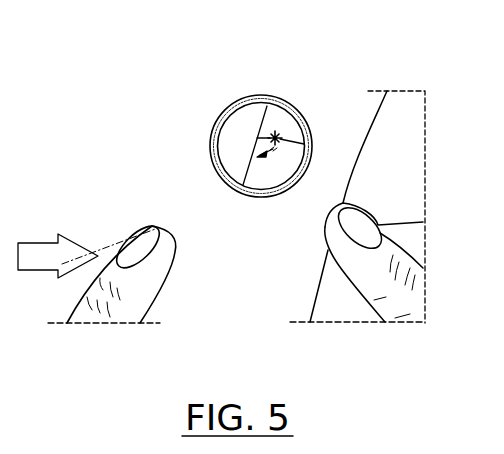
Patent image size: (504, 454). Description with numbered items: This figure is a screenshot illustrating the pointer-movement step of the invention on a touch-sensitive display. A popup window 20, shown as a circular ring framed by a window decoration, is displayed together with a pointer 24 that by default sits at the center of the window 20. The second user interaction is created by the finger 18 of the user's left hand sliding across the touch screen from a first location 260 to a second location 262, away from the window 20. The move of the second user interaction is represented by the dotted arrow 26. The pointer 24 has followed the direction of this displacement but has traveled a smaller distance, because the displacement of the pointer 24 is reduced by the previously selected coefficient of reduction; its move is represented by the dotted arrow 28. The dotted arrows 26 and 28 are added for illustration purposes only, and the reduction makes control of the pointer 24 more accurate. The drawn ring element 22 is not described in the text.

The finger 18 is at (152, 285).
The window 20 is at (188, 100).
The ring 22 is at (272, 113).
The pointer 24 is at (279, 135).
The dotted arrow 26 is at (120, 240).
The dotted arrow 28 is at (272, 151).
The first location 260 is at (66, 261).
The second location 262 is at (163, 227).